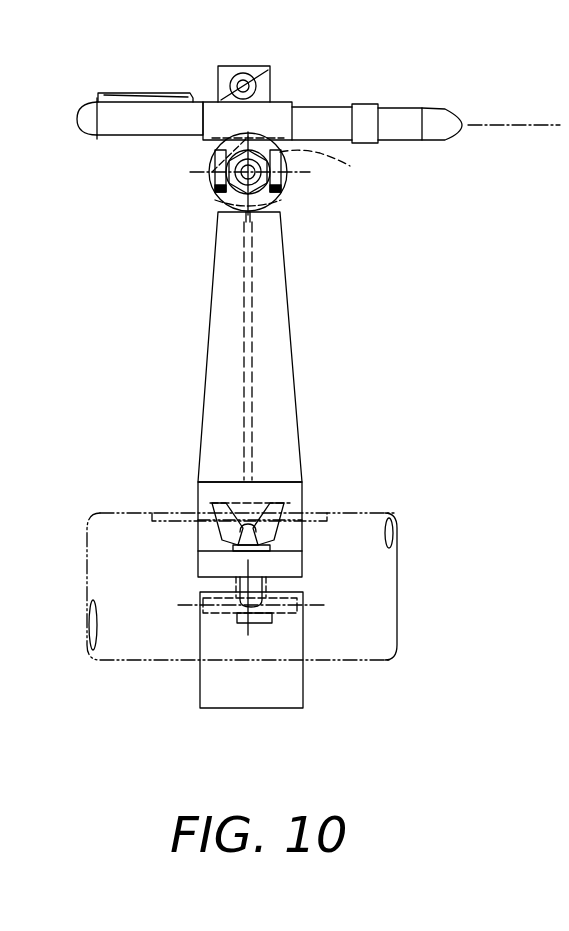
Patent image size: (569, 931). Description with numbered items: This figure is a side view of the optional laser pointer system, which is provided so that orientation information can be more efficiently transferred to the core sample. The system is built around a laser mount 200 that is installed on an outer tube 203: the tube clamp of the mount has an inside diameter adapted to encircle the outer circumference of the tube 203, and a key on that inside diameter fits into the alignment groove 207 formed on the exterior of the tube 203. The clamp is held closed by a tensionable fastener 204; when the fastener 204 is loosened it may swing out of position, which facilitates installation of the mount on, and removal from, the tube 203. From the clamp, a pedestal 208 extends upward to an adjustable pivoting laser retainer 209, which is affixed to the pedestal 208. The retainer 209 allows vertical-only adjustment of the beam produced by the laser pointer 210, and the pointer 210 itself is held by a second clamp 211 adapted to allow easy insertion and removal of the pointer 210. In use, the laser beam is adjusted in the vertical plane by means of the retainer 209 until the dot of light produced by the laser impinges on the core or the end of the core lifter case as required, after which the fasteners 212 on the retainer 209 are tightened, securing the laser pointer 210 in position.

The laser mount 200 is at (393, 273).
The outer tube 203 is at (153, 647).
The tensionable fastener 204 is at (280, 536).
The alignment groove 207 is at (166, 513).
The pedestal 208 is at (280, 380).
The adjustable pivoting laser retainer 209 is at (183, 190).
The laser pointer 210 is at (146, 118).
The second clamp 211 is at (293, 118).
The fasteners 212 is at (350, 166).